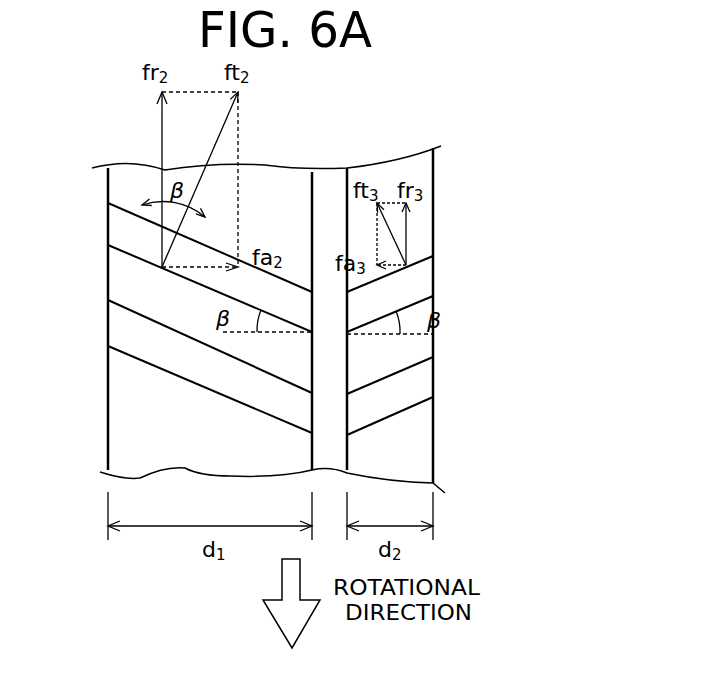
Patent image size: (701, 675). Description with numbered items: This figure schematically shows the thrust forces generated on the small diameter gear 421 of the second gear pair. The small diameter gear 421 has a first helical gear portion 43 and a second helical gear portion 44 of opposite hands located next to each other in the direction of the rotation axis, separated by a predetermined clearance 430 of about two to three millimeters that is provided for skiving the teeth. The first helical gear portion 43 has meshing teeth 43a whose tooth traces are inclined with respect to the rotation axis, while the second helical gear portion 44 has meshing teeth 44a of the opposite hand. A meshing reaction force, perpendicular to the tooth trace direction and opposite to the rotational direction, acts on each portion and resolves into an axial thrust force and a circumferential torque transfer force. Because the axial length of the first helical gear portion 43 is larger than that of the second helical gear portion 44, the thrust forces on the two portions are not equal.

The first helical gear portion 43 is at (108, 195).
The meshing teeth 43a is at (137, 240).
The clearance 430 is at (325, 188).
The second helical gear portion 44 is at (435, 420).
The meshing teeth 44a is at (417, 378).
The small diameter gear 421 is at (453, 150).